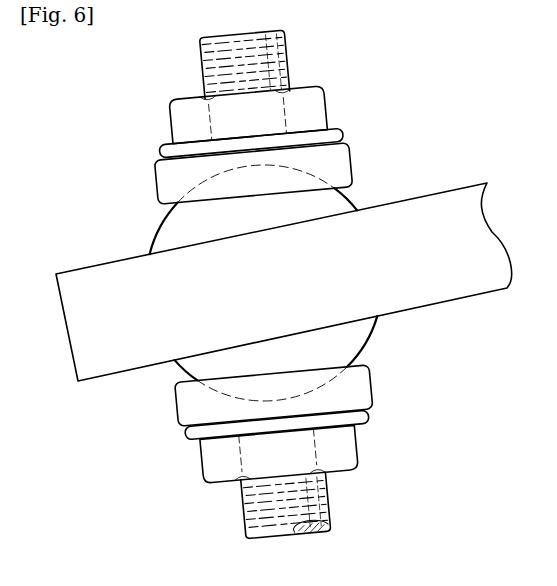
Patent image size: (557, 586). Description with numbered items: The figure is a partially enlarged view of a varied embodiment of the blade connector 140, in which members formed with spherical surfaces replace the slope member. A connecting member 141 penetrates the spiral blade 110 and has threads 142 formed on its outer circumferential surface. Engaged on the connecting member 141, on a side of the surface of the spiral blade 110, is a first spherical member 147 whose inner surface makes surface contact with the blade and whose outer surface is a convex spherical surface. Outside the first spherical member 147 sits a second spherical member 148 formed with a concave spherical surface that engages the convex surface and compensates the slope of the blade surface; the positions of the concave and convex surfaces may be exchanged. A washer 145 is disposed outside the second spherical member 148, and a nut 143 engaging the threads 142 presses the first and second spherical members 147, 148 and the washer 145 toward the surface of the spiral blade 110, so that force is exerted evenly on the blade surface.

The spiral blade 110 is at (93, 285).
The blade connector 140 is at (338, 108).
The connecting member 141 is at (330, 506).
The threads 142 is at (200, 49).
The nut 143 is at (170, 116).
The washer 145 is at (165, 148).
The first spherical member 147 is at (167, 232).
The second spherical member 148 is at (158, 181).